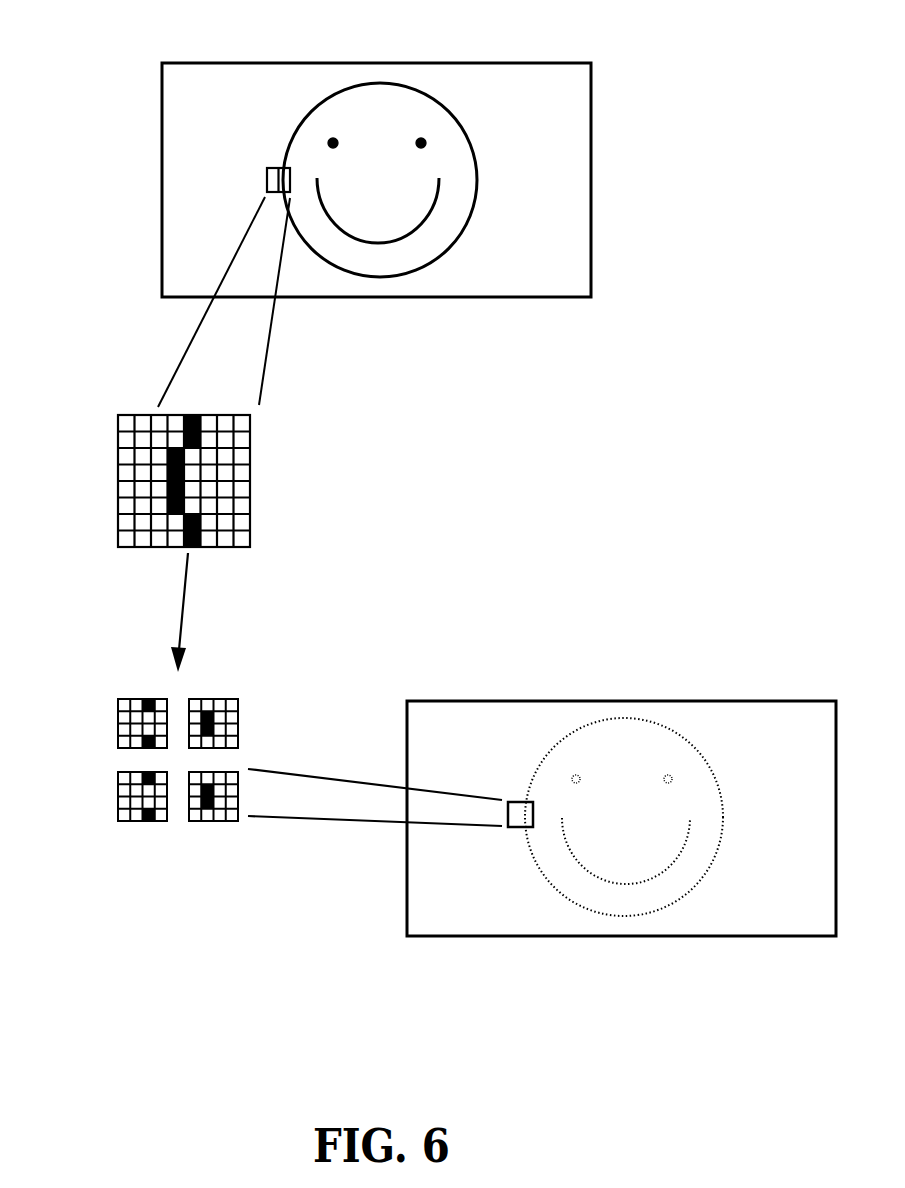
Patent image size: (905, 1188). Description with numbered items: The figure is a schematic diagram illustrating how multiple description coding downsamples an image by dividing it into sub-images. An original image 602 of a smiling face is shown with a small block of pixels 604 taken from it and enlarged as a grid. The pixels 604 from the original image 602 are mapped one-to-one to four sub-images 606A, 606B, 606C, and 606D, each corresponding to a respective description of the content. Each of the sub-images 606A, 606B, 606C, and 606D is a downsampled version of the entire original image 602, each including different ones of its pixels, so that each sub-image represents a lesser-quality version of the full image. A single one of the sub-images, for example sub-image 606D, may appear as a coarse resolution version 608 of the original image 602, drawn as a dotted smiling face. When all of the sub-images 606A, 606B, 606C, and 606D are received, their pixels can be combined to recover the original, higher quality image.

The image 602 is at (228, 62).
The pixels 604 is at (250, 455).
The sub-image 606A is at (118, 713).
The sub-image 606B is at (118, 787).
The sub-image 606C is at (238, 705).
The sub-image 606D is at (238, 778).
The coarse resolution version 608 is at (478, 699).